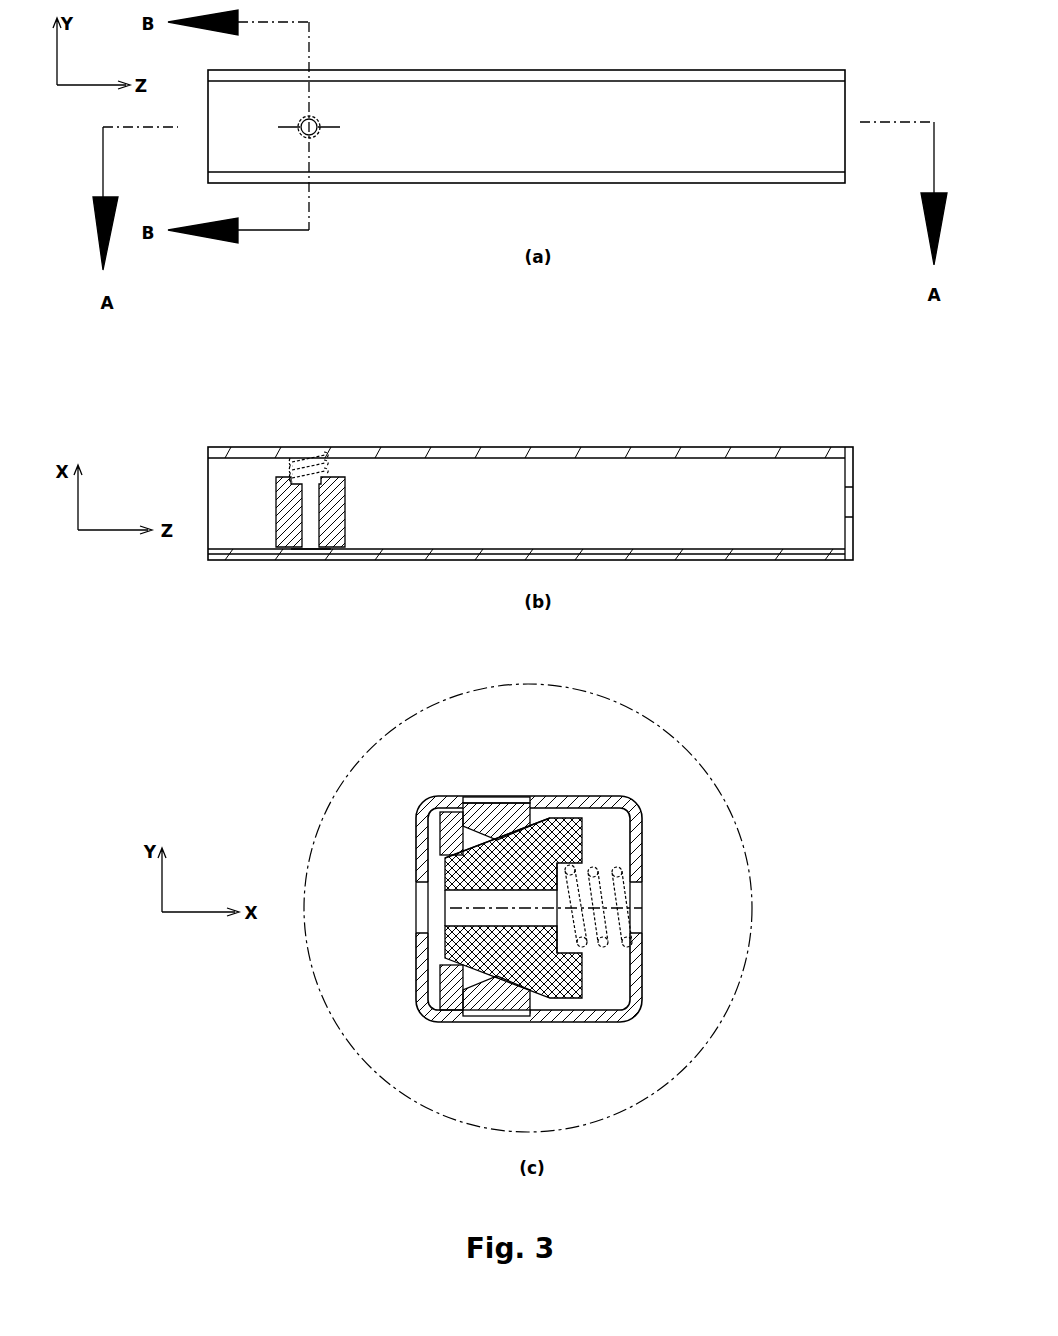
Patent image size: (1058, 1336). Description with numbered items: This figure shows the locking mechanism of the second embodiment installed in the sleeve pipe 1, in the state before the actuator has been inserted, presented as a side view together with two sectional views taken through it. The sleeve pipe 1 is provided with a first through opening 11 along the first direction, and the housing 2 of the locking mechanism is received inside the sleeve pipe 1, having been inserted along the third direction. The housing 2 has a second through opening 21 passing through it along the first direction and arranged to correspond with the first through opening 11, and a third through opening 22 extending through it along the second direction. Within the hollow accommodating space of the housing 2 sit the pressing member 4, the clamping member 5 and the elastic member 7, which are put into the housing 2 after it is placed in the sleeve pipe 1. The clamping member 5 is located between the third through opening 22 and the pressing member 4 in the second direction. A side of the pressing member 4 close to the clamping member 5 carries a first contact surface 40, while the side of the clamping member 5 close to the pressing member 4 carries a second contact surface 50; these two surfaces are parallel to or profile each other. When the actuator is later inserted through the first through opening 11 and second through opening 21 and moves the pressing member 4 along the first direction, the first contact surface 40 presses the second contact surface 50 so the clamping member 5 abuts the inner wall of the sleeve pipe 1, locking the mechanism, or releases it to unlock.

The sleeve pipe 1 is at (703, 98).
The first through opening 11 is at (318, 135).
The housing 2 is at (513, 455).
The second through opening 21 is at (637, 898).
The third through opening 22 is at (475, 797).
The pressing member 4 is at (337, 527).
The first contact surface 40 is at (518, 830).
The clamping member 5 is at (505, 815).
The second contact surface 50 is at (490, 835).
The elastic member 7 is at (298, 470).